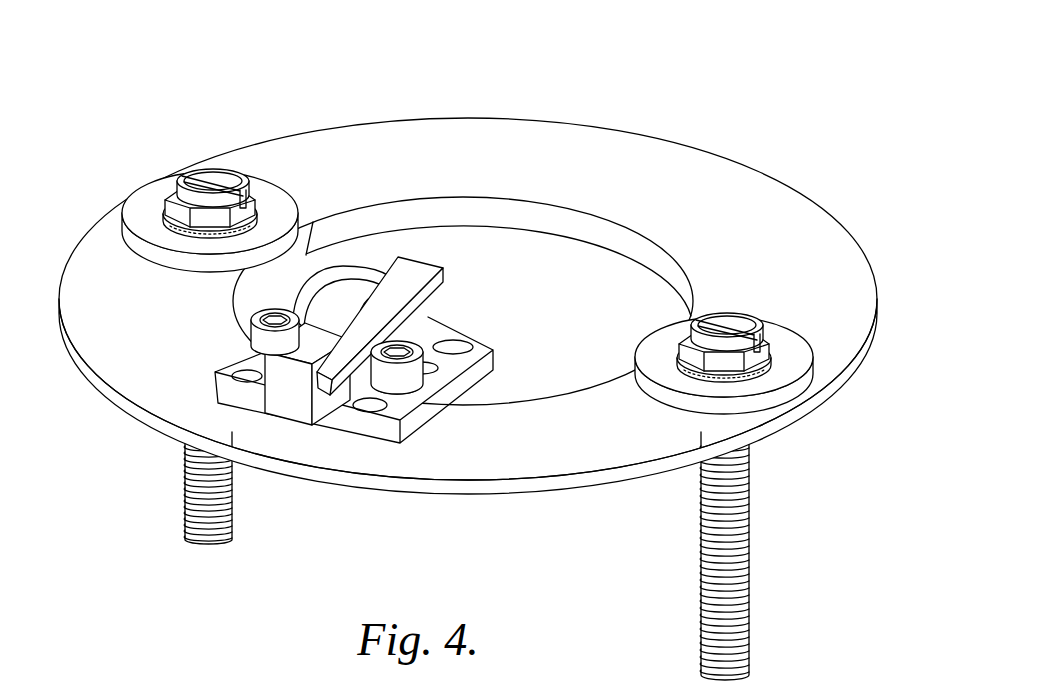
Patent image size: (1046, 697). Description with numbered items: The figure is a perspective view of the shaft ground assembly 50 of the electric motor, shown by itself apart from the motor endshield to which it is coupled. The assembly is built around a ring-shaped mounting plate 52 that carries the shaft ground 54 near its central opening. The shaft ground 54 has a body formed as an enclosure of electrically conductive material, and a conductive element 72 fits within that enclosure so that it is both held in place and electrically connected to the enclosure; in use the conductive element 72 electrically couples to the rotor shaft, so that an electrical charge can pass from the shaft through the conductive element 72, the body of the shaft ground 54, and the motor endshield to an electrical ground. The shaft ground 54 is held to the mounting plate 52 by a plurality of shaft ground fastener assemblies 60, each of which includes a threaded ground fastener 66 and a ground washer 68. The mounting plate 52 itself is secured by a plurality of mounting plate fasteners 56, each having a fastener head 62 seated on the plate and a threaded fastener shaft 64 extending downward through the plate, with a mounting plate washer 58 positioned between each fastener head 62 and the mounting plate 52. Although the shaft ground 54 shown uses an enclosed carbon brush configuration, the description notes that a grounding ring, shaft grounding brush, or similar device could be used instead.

The shaft ground assembly 50 is at (695, 60).
The mounting plate 52 is at (742, 165).
The shaft ground 54 is at (336, 452).
The mounting plate fasteners 56 is at (193, 162).
The mounting plate washers 58 is at (130, 240).
The shaft ground fastener assemblies 60 is at (236, 331).
The fastener head 62 is at (246, 190).
The threaded fastener shaft 64 is at (200, 515).
The threaded ground fastener 66 is at (262, 314).
The ground washer 68 is at (248, 358).
The conductive element 72 is at (430, 303).